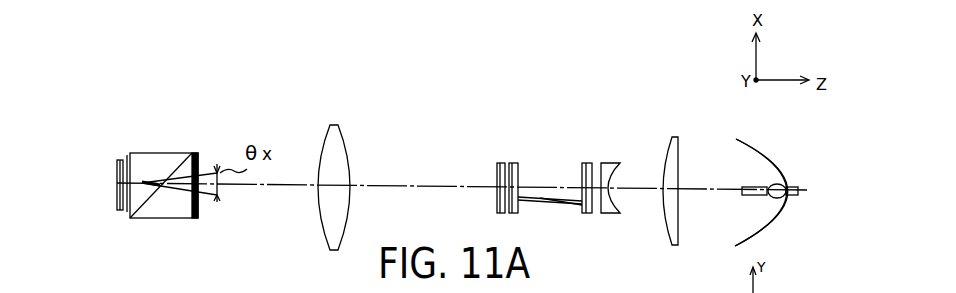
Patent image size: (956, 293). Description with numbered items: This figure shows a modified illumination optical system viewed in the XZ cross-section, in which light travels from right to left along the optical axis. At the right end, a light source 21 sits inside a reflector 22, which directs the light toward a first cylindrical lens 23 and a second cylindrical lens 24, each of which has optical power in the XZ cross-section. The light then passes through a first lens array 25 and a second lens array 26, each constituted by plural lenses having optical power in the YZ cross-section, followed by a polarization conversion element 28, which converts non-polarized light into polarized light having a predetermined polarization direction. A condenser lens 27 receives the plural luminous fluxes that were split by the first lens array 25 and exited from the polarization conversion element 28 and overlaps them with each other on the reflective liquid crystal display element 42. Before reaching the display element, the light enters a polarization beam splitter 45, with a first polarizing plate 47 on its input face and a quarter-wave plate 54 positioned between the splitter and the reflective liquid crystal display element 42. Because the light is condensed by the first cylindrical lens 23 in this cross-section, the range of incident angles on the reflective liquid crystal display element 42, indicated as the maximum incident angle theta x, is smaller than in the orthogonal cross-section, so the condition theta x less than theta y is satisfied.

The light source 21 is at (787, 181).
The reflector 22 is at (753, 141).
The first cylindrical lens 23 is at (675, 136).
The second cylindrical lens 24 is at (608, 162).
The first lens array 25 is at (588, 162).
The second lens array 26 is at (513, 162).
The condenser lens 27 is at (337, 121).
The polarization conversion element 28 is at (500, 162).
The reflective liquid crystal display element 42 is at (117, 175).
The polarization beam splitter 45 is at (165, 152).
The first polarizing plate 47 is at (198, 152).
The quarter-wave plate 54 is at (125, 153).